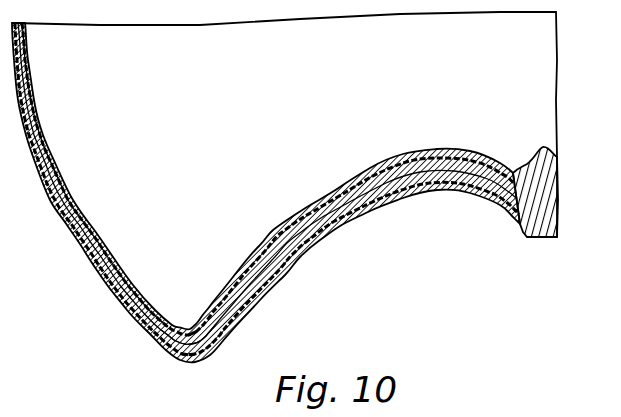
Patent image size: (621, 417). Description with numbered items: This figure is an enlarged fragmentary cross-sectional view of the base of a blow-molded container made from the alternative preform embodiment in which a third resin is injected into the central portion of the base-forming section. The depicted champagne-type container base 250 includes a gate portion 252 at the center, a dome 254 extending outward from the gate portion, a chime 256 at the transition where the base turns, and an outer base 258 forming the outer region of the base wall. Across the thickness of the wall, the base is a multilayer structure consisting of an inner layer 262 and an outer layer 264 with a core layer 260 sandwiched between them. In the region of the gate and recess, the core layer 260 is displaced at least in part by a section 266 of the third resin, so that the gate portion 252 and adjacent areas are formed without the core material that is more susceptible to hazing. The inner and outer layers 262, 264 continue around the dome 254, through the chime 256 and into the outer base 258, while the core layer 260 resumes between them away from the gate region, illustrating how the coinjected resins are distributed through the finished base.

The champagne-type container base 250 is at (410, 199).
The gate portion 252 is at (541, 240).
The dome 254 is at (357, 213).
The chime 256 is at (192, 361).
The outer base 258 is at (87, 256).
The core layer 260 is at (80, 212).
The inner layer 262 is at (117, 260).
The outer layer 264 is at (107, 283).
The section 266 is at (430, 150).